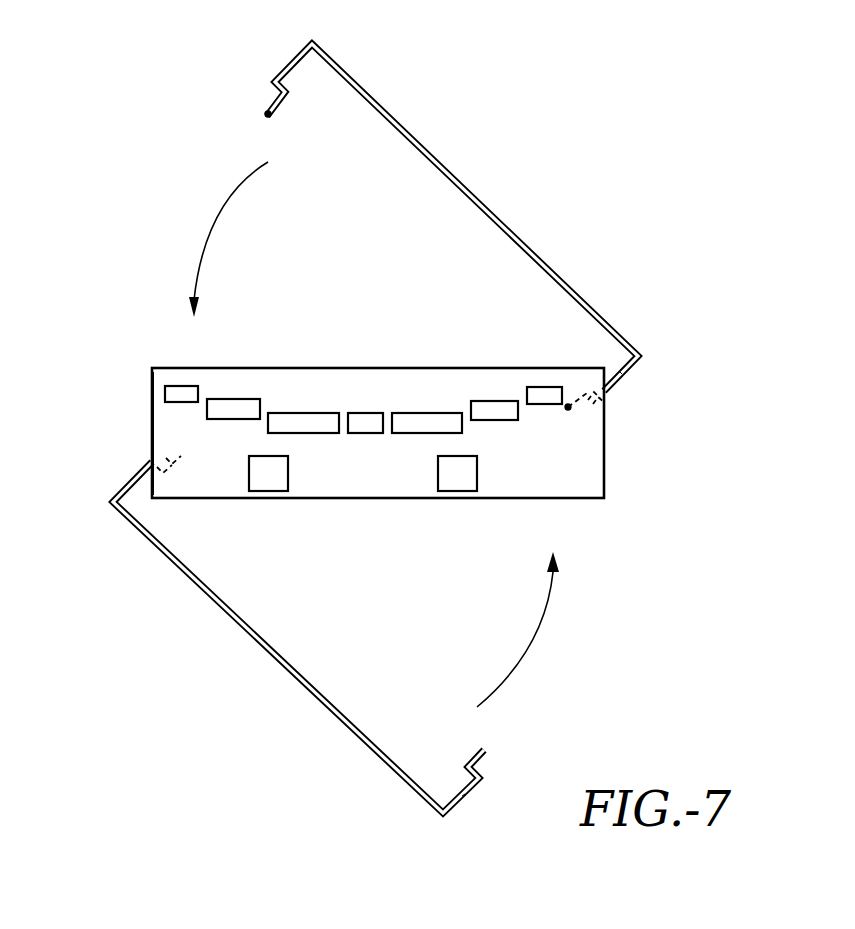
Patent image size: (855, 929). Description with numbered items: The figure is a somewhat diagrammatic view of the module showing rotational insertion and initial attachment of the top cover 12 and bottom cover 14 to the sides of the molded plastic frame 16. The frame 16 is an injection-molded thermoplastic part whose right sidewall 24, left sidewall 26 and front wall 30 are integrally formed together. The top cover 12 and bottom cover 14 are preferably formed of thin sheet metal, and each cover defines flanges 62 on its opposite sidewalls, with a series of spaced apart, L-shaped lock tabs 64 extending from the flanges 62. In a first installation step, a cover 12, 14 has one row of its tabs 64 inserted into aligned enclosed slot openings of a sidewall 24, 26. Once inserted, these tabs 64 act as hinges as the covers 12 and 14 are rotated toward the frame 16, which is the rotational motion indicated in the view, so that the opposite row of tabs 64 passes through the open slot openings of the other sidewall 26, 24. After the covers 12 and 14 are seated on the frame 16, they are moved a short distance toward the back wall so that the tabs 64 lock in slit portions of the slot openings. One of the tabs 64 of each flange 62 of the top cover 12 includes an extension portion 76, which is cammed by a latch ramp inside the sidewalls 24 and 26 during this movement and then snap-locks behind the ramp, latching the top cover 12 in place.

The top cover 12 is at (481, 196).
The bottom cover 14 is at (282, 664).
The frame 16 is at (582, 530).
The right sidewall 24 is at (605, 462).
The left sidewall 26 is at (152, 396).
The front wall 30 is at (557, 457).
The flanges 62 is at (298, 62).
The lock tabs 64 is at (283, 96).
The extension portion 76 is at (266, 114).